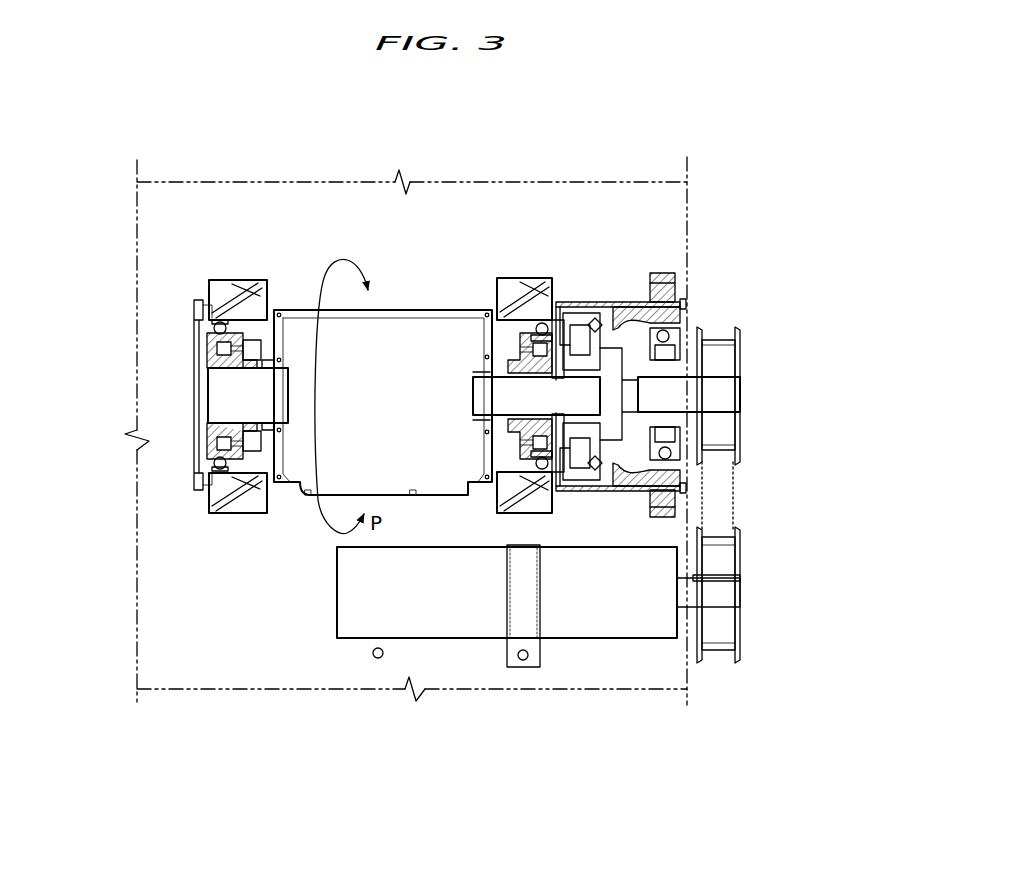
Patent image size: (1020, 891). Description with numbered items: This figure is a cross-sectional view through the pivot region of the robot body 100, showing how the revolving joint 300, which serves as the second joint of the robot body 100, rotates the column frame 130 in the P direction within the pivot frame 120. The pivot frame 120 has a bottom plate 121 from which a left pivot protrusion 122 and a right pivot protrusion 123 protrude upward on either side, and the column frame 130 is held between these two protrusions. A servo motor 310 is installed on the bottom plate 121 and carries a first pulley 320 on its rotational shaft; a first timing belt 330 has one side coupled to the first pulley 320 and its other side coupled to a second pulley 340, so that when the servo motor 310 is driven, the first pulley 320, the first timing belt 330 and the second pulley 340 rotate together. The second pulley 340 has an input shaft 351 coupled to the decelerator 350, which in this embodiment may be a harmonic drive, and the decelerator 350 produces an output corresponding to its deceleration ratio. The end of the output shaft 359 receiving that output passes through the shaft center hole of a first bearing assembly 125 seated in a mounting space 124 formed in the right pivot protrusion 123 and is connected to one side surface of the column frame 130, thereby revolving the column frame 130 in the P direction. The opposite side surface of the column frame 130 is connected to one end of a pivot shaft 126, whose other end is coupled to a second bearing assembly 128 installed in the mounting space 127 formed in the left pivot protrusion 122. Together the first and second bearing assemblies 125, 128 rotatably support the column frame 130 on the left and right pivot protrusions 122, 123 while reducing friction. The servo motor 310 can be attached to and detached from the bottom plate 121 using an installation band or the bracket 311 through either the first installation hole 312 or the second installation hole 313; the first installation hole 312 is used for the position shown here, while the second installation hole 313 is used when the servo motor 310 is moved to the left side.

The robot body 100 is at (272, 98).
The pivot frame 120 is at (206, 513).
The bottom plate 121 is at (148, 666).
The left pivot protrusion 122 is at (236, 280).
The right pivot protrusion 123 is at (525, 278).
The mounting space 124 is at (510, 322).
The first bearing assembly 125 is at (520, 340).
The pivot shaft 126 is at (260, 395).
The mounting space 127 is at (208, 337).
The second bearing assembly 128 is at (206, 346).
The column frame 130 is at (404, 413).
The revolving joint 300 is at (745, 393).
The servo motor 310 is at (612, 625).
The bracket 311 is at (517, 590).
The first installation hole 312 is at (523, 662).
The second installation hole 313 is at (379, 660).
The first pulley 320 is at (740, 630).
The first timing belt 330 is at (732, 494).
The second pulley 340 is at (740, 427).
The decelerator 350 is at (650, 265).
The input shaft 351 is at (717, 387).
The output shaft 359 is at (580, 387).